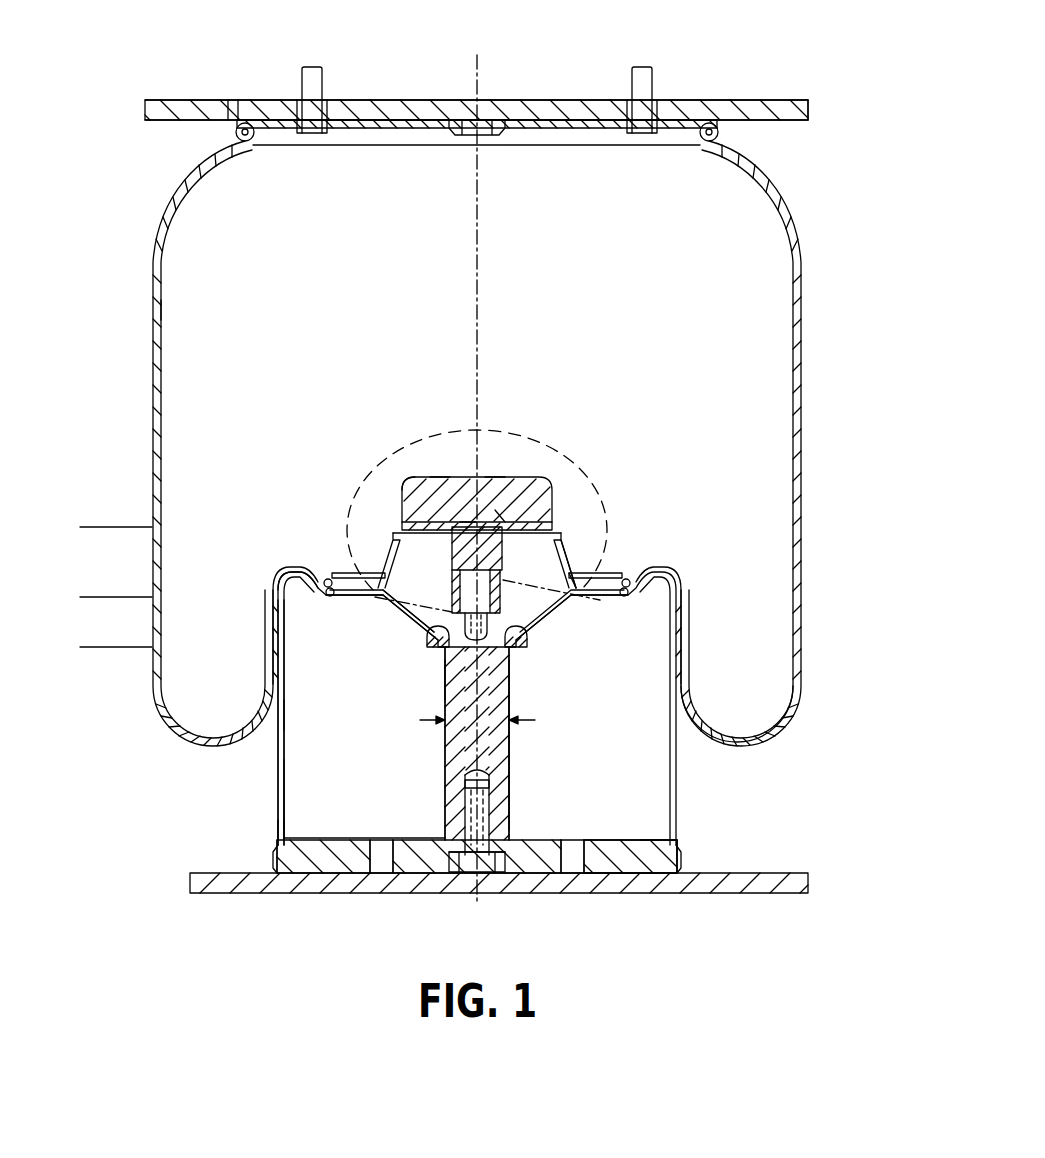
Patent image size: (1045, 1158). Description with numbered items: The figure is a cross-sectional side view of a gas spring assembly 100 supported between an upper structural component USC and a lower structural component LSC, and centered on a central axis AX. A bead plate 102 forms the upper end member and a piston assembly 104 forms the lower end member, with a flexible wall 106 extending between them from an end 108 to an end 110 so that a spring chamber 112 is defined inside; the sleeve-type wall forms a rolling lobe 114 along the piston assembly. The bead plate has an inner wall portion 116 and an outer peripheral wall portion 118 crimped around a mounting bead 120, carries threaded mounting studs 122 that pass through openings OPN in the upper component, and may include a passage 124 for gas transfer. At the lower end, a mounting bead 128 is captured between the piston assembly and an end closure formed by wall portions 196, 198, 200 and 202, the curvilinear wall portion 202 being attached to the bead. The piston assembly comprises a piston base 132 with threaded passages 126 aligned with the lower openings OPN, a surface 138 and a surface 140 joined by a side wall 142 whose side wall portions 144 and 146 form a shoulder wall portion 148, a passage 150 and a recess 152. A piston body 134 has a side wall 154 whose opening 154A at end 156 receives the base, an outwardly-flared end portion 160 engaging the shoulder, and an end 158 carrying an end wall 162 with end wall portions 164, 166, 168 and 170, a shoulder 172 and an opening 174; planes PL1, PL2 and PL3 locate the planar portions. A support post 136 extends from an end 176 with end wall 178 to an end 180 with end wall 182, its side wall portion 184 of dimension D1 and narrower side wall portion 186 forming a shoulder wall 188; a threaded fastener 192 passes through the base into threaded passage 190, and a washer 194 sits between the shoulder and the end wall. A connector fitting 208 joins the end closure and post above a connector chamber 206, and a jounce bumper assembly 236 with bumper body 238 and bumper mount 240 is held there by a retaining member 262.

The gas spring assembly 100 is at (812, 164).
The bead plate 102 is at (397, 110).
The piston assembly 104 is at (277, 760).
The flexible wall 106 is at (153, 380).
The end 108 is at (258, 170).
The end 110 is at (268, 562).
The spring chamber 112 is at (249, 293).
The rolling lobe 114 is at (728, 745).
The inner wall portion 116 is at (598, 108).
The outer peripheral wall portion 118 is at (236, 136).
The mounting bead 120 is at (233, 118).
The threaded mounting studs 122 is at (302, 80).
The passage 124 is at (462, 120).
The threaded passages 126 is at (378, 850).
The mounting bead 128 is at (315, 577).
The piston base 132 is at (326, 868).
The piston body 134 is at (280, 795).
The support post 136 is at (509, 746).
The surface 138 is at (641, 866).
The surface 140 is at (600, 850).
The side wall 142 is at (276, 857).
The side wall portion 144 is at (672, 878).
The side wall portion 146 is at (666, 850).
The shoulder wall portion 148 is at (288, 868).
The passage 150 is at (507, 862).
The recess 152 is at (450, 870).
The side wall 154 is at (285, 716).
The opening 154A is at (320, 830).
The end 156 is at (269, 839).
The end 158 is at (297, 593).
The outwardly-flared end portion 160 is at (683, 852).
The end wall 162 is at (384, 607).
The end wall portion 164 is at (425, 633).
The end wall portion 166 is at (410, 617).
The end wall portion 168 is at (608, 598).
The end wall portion 170 is at (659, 597).
The shoulder 172 is at (666, 612).
The opening 174 is at (522, 634).
The end 176 is at (360, 838).
The end wall 178 is at (465, 832).
The end 180 is at (582, 573).
The end wall 182 is at (493, 580).
The side wall portion 184 is at (444, 742).
The side wall portion 186 is at (455, 600).
The shoulder wall 188 is at (509, 652).
The threaded passage 190 is at (520, 800).
The threaded fastener 192 is at (465, 791).
The washer 194 is at (445, 662).
The wall portion 196 is at (538, 487).
The wall portion 198 is at (393, 553).
The wall portion 200 is at (338, 573).
The wall portion 202 is at (325, 580).
The connector chamber 206 is at (408, 480).
The connector fitting 208 is at (572, 560).
The jounce bumper assembly 236 is at (480, 487).
The bumper body 238 is at (487, 487).
The bumper mount 240 is at (437, 478).
The retaining member 262 is at (493, 487).
The central axis AX is at (480, 207).
The upper structural component USC is at (775, 100).
The lower structural component LSC is at (782, 886).
The openings OPN is at (295, 110).
The plane PL1 is at (116, 634).
The plane PL2 is at (116, 584).
The plane PL3 is at (116, 514).
The reference dimension D1 is at (540, 720).